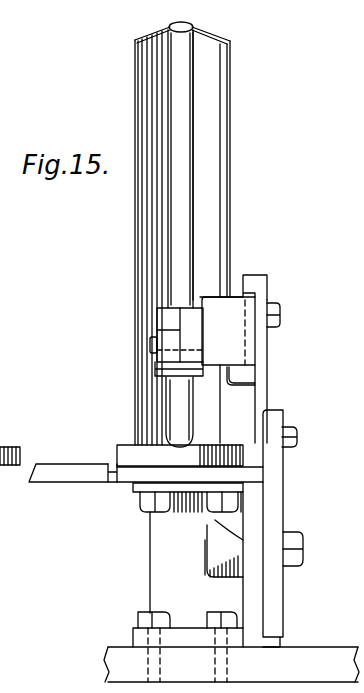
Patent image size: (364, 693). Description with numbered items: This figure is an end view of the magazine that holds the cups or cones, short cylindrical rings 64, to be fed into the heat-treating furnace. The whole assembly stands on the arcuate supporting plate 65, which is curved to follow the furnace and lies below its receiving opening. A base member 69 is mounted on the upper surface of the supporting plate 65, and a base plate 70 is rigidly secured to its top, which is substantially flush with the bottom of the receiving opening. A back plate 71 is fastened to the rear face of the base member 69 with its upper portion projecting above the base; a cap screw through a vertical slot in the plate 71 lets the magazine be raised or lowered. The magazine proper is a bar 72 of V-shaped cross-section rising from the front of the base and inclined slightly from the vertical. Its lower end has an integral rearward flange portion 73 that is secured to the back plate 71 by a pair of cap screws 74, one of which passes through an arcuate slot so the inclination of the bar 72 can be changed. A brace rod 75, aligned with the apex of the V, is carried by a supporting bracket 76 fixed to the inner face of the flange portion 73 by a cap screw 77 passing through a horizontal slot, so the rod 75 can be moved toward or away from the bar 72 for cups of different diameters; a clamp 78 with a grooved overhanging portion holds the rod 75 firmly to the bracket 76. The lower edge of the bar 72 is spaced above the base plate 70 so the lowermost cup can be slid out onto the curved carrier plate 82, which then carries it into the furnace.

The rings 64 is at (180, 457).
The supporting plate 65 is at (115, 653).
The base member 69 is at (160, 560).
The base plate 70 is at (112, 485).
The plate 71 is at (281, 490).
The bar 72 is at (212, 180).
The flange portion 73 is at (237, 400).
The cap screws 74 is at (298, 432).
The rod 75 is at (176, 228).
The supporting bracket 76 is at (232, 306).
The cap screw 77 is at (281, 316).
The clamp 78 is at (160, 375).
The carrier plate 82 is at (48, 478).